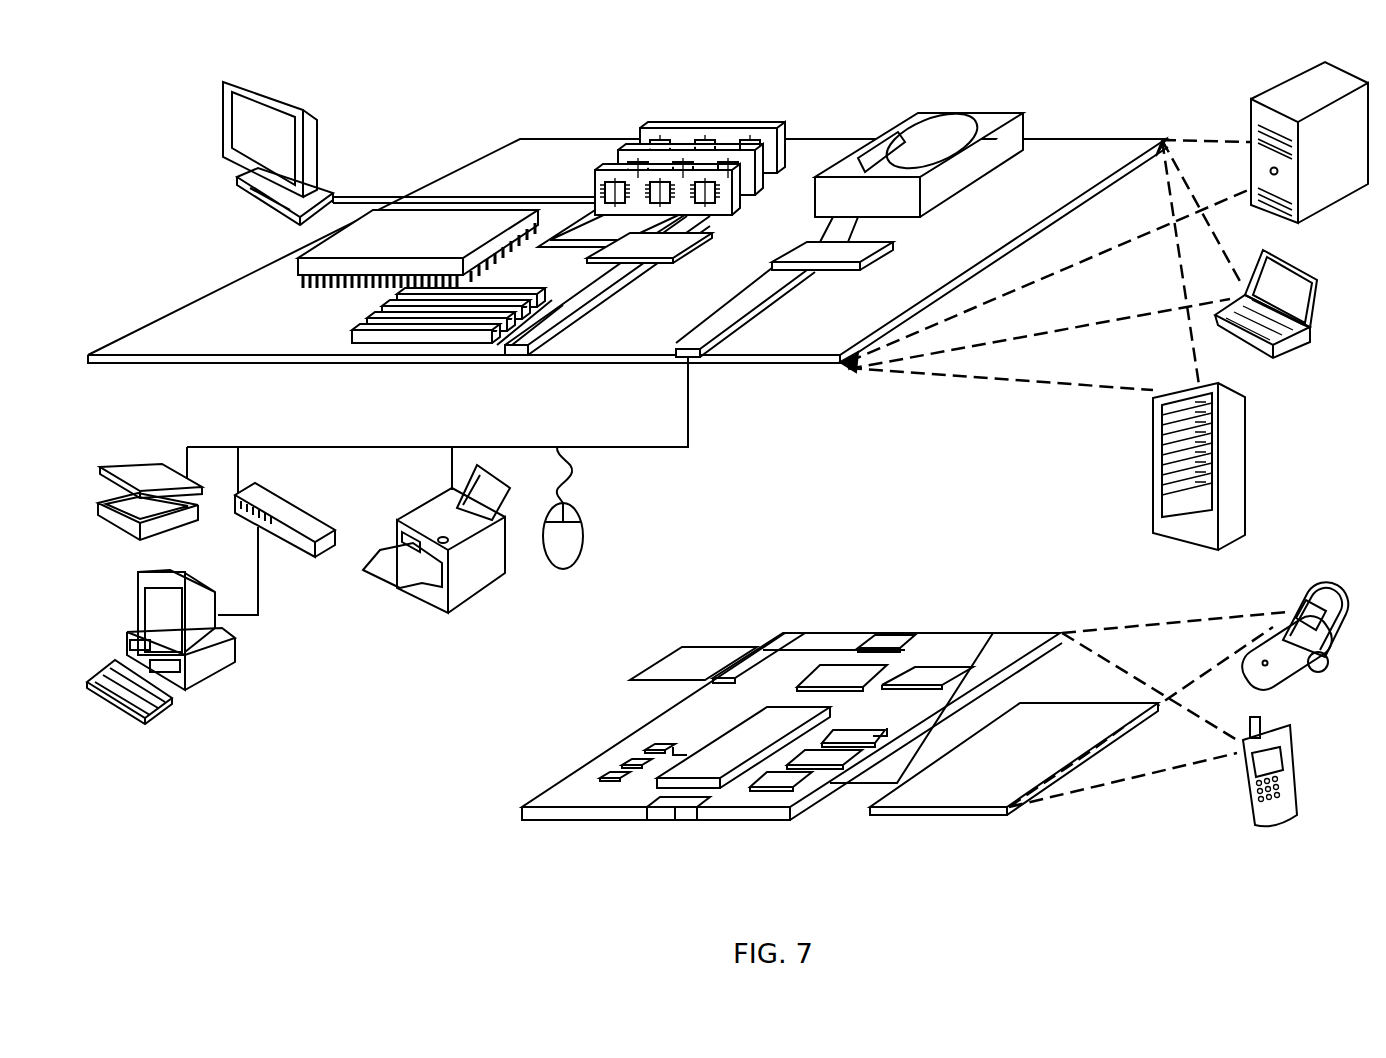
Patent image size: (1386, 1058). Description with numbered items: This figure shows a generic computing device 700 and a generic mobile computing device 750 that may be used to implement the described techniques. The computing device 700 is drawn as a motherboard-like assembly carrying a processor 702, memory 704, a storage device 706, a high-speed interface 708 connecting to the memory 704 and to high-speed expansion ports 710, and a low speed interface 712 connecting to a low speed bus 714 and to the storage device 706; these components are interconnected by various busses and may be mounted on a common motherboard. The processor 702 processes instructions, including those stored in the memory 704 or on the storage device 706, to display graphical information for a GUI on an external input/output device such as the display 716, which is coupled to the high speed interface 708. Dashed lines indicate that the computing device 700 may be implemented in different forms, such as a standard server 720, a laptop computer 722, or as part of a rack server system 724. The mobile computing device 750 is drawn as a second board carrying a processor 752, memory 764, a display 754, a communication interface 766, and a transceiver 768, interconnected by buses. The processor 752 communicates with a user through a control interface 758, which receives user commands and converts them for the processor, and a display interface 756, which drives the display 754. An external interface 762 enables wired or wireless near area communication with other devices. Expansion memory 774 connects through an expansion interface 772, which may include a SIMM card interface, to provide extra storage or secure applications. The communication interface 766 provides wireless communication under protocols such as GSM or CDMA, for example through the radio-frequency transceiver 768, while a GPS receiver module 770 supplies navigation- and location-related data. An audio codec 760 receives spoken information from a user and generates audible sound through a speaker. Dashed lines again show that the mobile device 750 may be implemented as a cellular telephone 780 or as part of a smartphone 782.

The computing device 700 is at (426, 106).
The processor 702 is at (300, 263).
The memory 704 is at (653, 128).
The storage device 706 is at (905, 128).
The high-speed interface 708 is at (625, 248).
The high-speed expansion ports 710 is at (373, 323).
The low speed interface 712 is at (810, 243).
The low speed bus 714 is at (700, 358).
The display 716 is at (232, 78).
The standard server 720 is at (1250, 114).
The laptop computer 722 is at (1346, 226).
The rack server system 724 is at (1155, 494).
The mobile computing device 750 is at (499, 813).
The processor 752 is at (713, 772).
The display 754 is at (970, 793).
The display interface 756 is at (785, 780).
The control interface 758 is at (823, 753).
The audio codec 760 is at (852, 733).
The external interface 762 is at (677, 810).
The memory 764 is at (620, 768).
The communication interface 766 is at (843, 677).
The transceiver 768 is at (927, 675).
The GPS receiver module 770 is at (897, 642).
The expansion interface 772 is at (765, 645).
The expansion memory 774 is at (680, 645).
The cellular telephone 780 is at (1310, 592).
The smartphone 782 is at (1241, 777).